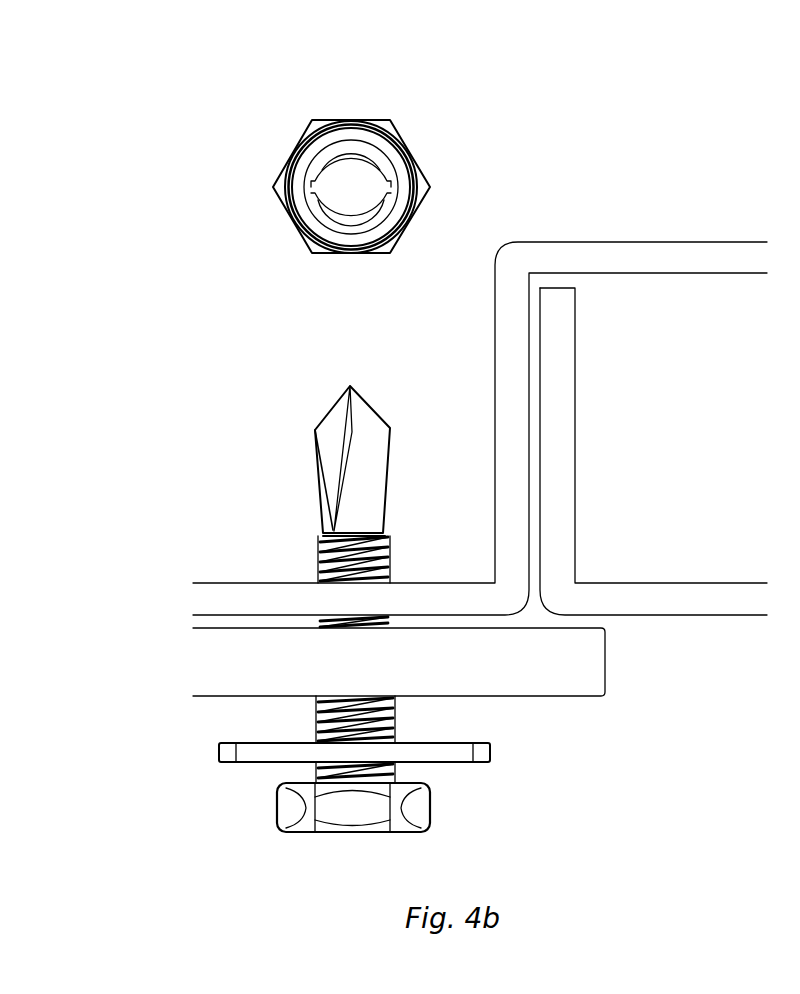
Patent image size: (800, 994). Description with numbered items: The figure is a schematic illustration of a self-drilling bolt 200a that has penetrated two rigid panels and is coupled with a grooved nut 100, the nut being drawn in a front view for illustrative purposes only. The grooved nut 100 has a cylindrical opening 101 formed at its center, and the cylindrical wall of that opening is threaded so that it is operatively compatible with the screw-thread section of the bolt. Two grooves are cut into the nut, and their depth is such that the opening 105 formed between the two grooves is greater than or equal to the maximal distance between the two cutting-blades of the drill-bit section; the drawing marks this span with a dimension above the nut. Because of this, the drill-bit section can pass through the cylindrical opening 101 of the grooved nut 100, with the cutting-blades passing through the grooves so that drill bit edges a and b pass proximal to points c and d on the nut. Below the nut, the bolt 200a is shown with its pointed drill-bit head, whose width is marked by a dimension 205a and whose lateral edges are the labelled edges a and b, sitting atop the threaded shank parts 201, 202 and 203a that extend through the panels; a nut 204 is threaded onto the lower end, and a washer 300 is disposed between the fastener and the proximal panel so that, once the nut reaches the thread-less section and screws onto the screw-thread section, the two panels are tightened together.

The grooved nut 100 is at (308, 248).
The cylindrical opening 101 is at (350, 198).
The opening formed between the two grooves 105 is at (392, 185).
The point d is at (303, 187).
The point c is at (393, 190).
The self-drilling bolt 200a is at (278, 841).
The threaded shank 201 is at (390, 553).
The base of wedge 202 is at (345, 544).
The wedge head 203a is at (226, 459).
The nut 204 is at (430, 801).
The width of wedge head 205a is at (389, 428).
The washer 300 is at (214, 761).
The drill bit edge a is at (315, 430).
The drill bit edge b is at (390, 428).